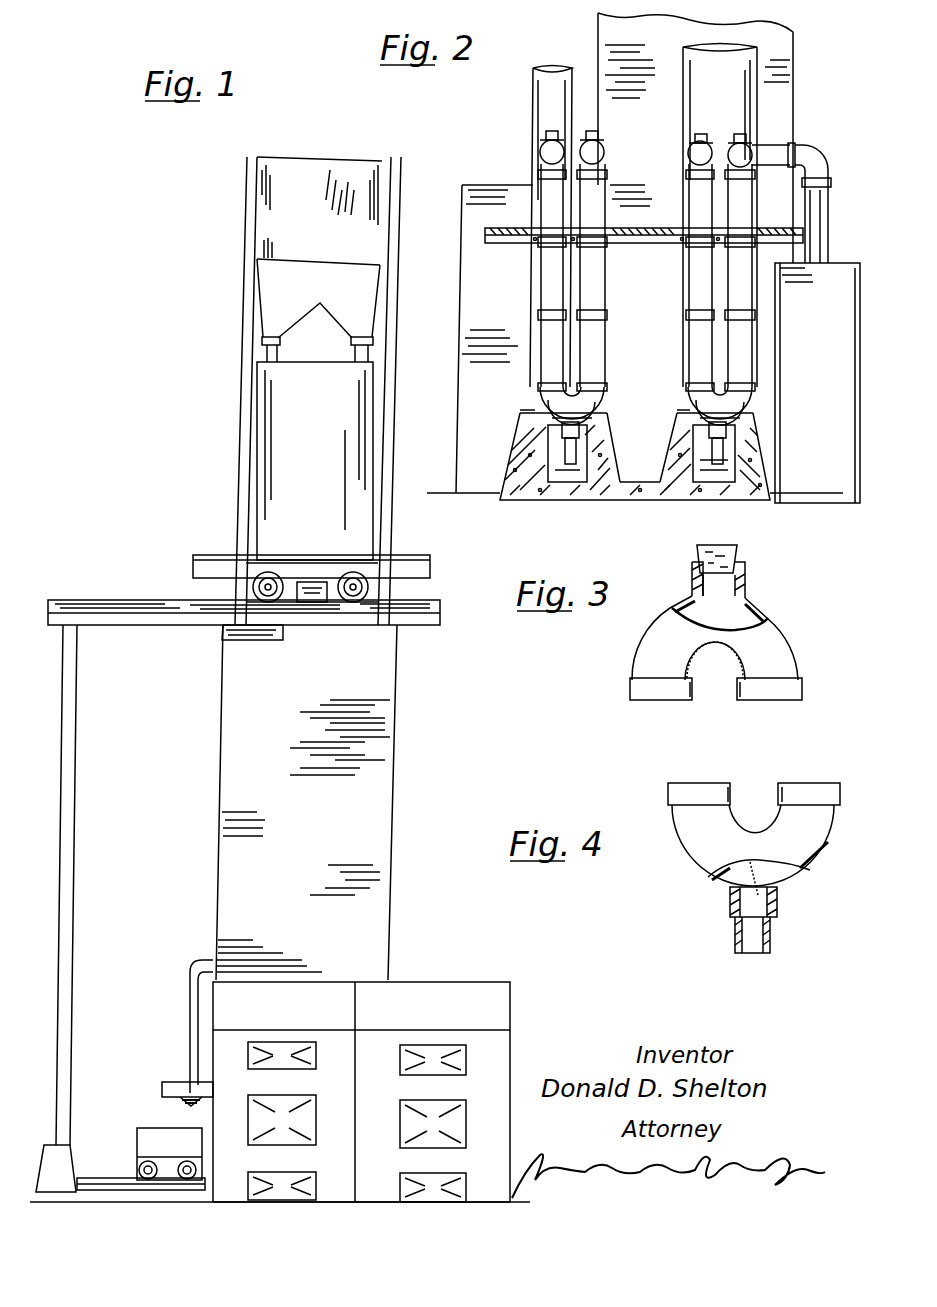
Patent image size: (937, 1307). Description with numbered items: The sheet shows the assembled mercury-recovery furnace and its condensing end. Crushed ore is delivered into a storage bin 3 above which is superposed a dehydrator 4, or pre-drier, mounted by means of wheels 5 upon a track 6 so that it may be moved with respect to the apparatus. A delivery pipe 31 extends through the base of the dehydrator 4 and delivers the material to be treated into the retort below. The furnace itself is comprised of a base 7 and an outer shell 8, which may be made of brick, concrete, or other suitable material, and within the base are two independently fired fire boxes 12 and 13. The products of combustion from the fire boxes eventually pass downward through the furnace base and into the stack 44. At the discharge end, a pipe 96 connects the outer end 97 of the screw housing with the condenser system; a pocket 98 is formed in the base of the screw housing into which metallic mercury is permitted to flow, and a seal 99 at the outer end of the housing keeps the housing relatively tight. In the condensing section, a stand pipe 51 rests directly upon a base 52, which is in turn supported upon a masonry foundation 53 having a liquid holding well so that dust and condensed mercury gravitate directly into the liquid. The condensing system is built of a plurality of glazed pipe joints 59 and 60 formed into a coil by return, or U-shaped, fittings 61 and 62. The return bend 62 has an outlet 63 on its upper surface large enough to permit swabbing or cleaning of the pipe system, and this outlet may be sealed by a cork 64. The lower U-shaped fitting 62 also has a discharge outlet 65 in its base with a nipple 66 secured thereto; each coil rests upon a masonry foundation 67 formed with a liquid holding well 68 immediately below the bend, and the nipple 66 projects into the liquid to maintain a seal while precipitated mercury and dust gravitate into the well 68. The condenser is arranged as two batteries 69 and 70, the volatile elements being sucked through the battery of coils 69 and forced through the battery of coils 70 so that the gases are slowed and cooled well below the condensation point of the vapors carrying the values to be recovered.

In FIG. 1, the storage bin 3 is at (322, 178).
In FIG. 1, the dehydrator 4 is at (290, 390).
In FIG. 1, the wheels 5 is at (342, 572).
In FIG. 1, the delivery pipe 31 is at (312, 600).
In FIG. 1, the track 6 is at (110, 602).
In FIG. 1, the outer shell 8 is at (397, 702).
In FIG. 2, the outer shell 8 is at (782, 47).
In FIG. 1, the base 7 is at (361, 1092).
In FIG. 1, the fire box 12 is at (455, 1105).
In FIG. 1, the fire box 13 is at (310, 1092).
In FIG. 1, the pipe 96 is at (194, 1017).
In FIG. 1, the outer end of the screw housing 97 is at (203, 1090).
In FIG. 1, the pocket 98 is at (198, 1102).
In FIG. 1, the seal 99 is at (160, 1105).
In FIG. 2, the stand pipe 51 is at (548, 104).
In FIG. 2, the stack 44 is at (745, 100).
In FIG. 2, the glazed pipe joint 59 is at (548, 275).
In FIG. 2, the glazed pipe joint 60 is at (602, 365).
In FIG. 2, the U-shaped fitting 61 is at (600, 158).
In FIG. 3, the U-shaped fitting 61 is at (777, 650).
In FIG. 2, the U-shaped fitting 62 is at (600, 410).
In FIG. 4, the U-shaped fitting 62 is at (680, 835).
In FIG. 2, the outlet 63 is at (596, 145).
In FIG. 3, the outlet 63 is at (740, 572).
In FIG. 2, the cork 64 is at (680, 135).
In FIG. 3, the cork 64 is at (735, 548).
In FIG. 2, the discharge outlet 65 is at (745, 438).
In FIG. 4, the discharge outlet 65 is at (780, 910).
In FIG. 2, the nipple 66 is at (745, 458).
In FIG. 4, the nipple 66 is at (772, 940).
In FIG. 2, the masonry foundation 67 is at (655, 450).
In FIG. 2, the liquid holding well 68 is at (573, 498).
In FIG. 2, the battery of coils 69 is at (548, 345).
In FIG. 2, the battery of coils 70 is at (760, 350).
In FIG. 2, the base 52 is at (520, 412).
In FIG. 2, the masonry foundation 53 is at (520, 420).